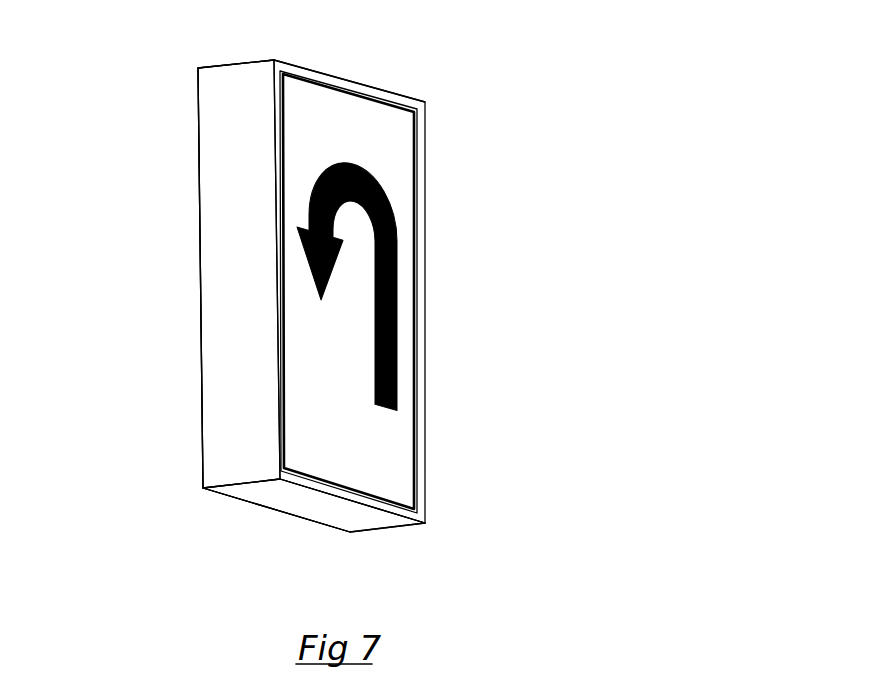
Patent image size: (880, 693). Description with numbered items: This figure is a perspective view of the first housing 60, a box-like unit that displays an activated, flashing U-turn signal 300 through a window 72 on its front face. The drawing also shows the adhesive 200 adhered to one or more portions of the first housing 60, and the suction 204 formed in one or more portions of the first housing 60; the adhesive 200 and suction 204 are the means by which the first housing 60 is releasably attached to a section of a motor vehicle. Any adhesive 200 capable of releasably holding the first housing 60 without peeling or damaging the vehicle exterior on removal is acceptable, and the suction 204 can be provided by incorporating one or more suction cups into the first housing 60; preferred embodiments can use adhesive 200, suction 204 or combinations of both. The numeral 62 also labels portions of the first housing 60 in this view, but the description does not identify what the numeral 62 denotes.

The first housing 60 is at (217, 64).
The side wall of housing 62 is at (232, 376).
The window 72 is at (377, 452).
The adhesive 200 is at (258, 60).
The suction 204 is at (340, 513).
The U-turn signal 300 is at (375, 182).